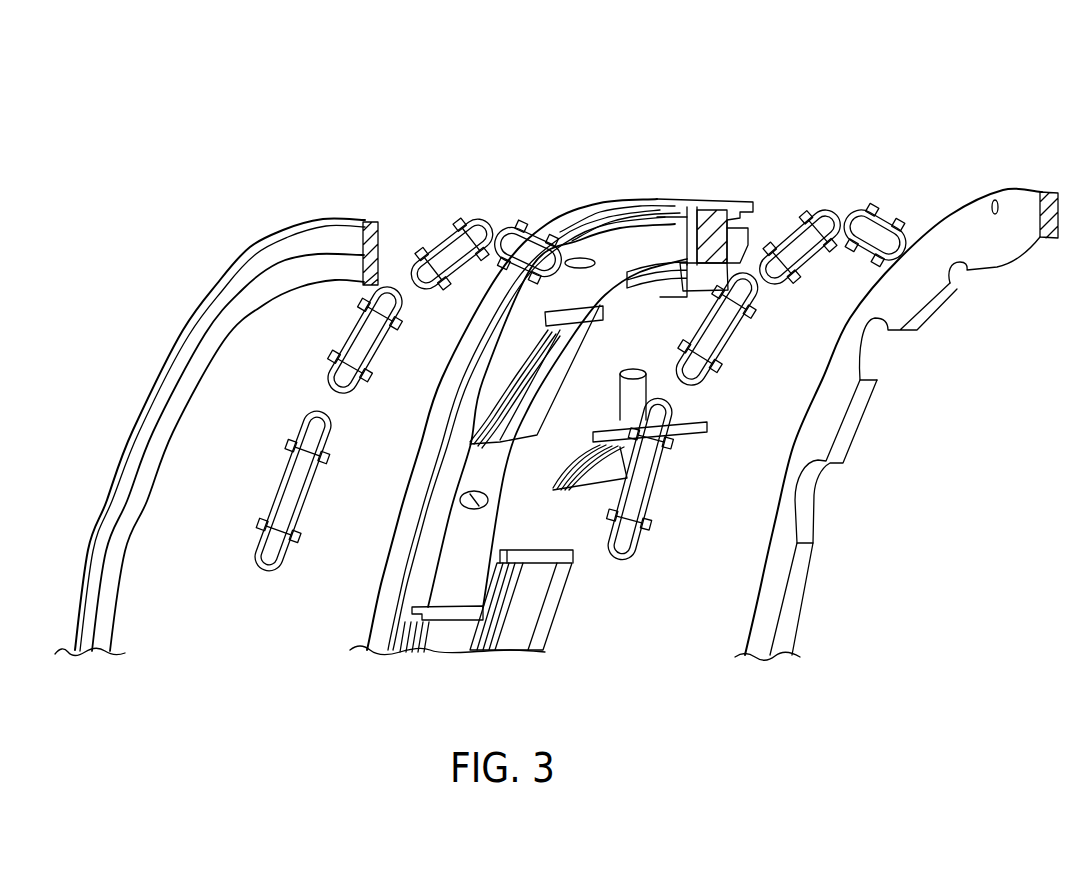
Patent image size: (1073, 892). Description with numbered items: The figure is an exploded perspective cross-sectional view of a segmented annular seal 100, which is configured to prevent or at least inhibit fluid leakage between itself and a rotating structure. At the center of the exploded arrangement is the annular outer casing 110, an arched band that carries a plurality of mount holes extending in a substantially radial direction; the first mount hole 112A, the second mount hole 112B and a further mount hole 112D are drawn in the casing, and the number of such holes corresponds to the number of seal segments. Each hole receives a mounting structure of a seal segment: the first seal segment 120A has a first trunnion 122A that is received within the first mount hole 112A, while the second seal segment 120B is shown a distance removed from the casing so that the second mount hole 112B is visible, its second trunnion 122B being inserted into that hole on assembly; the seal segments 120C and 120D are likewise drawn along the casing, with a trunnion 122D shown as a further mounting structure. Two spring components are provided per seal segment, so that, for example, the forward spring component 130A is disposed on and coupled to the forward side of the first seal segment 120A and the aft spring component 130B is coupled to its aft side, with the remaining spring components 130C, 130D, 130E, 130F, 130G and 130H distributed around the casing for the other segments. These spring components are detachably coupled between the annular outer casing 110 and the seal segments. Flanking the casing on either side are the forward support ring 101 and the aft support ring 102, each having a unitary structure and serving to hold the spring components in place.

The annular seal 100 is at (223, 103).
The forward support ring 101 is at (280, 243).
The aft support ring 102 is at (1000, 253).
The annular outer casing 110 is at (640, 192).
The first mount hole 112A is at (714, 250).
The second mount hole 112B is at (592, 258).
The mount hole 112D is at (467, 507).
The first seal segment 120A is at (682, 303).
The second seal segment 120B is at (592, 488).
The seal segment 120C is at (535, 444).
The seal segment 120D is at (560, 623).
The first trunnion 122A is at (745, 268).
The second trunnion 122B is at (614, 414).
The trunnion 122D is at (487, 581).
The forward spring component 130A is at (535, 213).
The aft spring component 130B is at (889, 194).
The spring component 130C is at (450, 213).
The spring component 130D is at (817, 194).
The spring component 130E is at (343, 321).
The spring component 130F is at (740, 345).
The spring component 130G is at (291, 441).
The spring component 130H is at (665, 492).